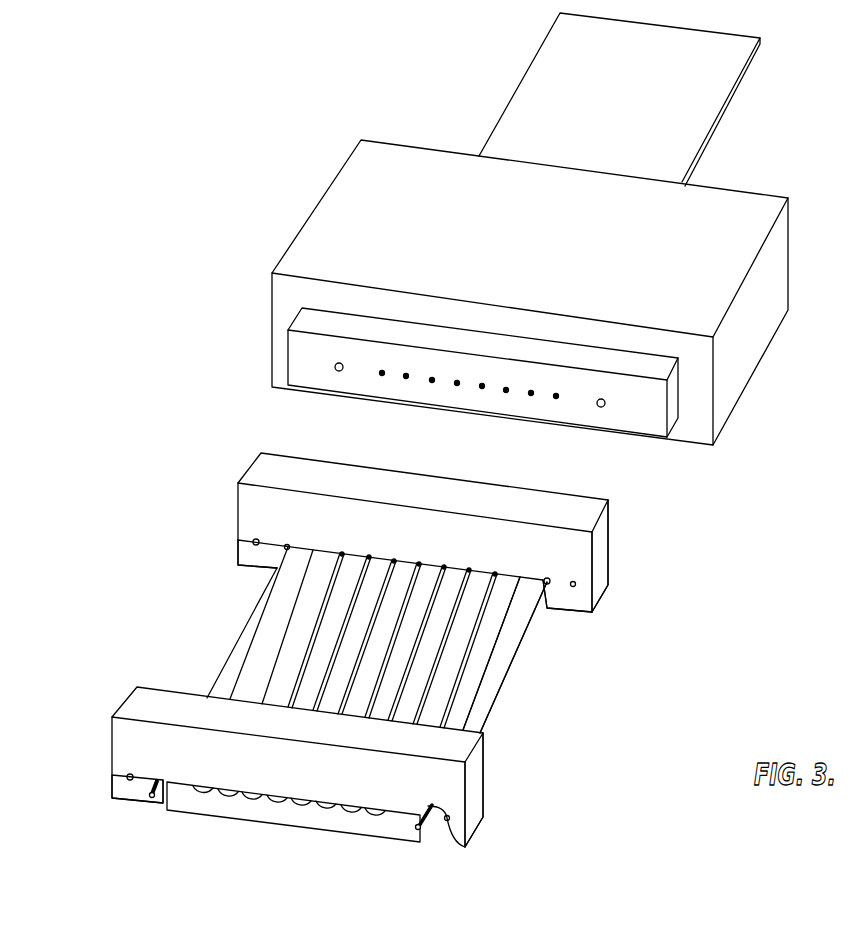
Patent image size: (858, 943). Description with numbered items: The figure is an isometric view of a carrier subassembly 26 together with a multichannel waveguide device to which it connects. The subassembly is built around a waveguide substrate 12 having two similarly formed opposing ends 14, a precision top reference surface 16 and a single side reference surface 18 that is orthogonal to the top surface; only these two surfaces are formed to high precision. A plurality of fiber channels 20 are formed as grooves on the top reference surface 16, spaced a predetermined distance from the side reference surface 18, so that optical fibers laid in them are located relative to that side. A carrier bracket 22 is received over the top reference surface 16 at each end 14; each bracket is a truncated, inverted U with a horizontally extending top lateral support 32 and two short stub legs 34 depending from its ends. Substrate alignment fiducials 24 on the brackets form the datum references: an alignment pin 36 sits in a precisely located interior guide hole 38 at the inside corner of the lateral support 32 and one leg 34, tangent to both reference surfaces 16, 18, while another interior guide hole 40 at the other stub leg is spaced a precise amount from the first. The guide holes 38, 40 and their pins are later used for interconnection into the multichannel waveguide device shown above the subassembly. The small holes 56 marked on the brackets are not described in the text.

The substrate 12 is at (261, 623).
The opposing ends 14 is at (190, 810).
The top reference surface 16 is at (490, 652).
The side reference surface 18 is at (498, 690).
The fiber channels 20 is at (342, 555).
The carrier bracket 22 is at (603, 520).
The substrate alignment fiducials 24 is at (548, 581).
The carrier subassembly 26 is at (203, 645).
The top lateral support 32 is at (364, 496).
The stub legs 34 is at (238, 553).
The alignment pin 36 is at (419, 830).
The interior guide hole 38 is at (548, 609).
The interior guide hole 40 is at (287, 545).
The mounting hole 56 is at (256, 540).